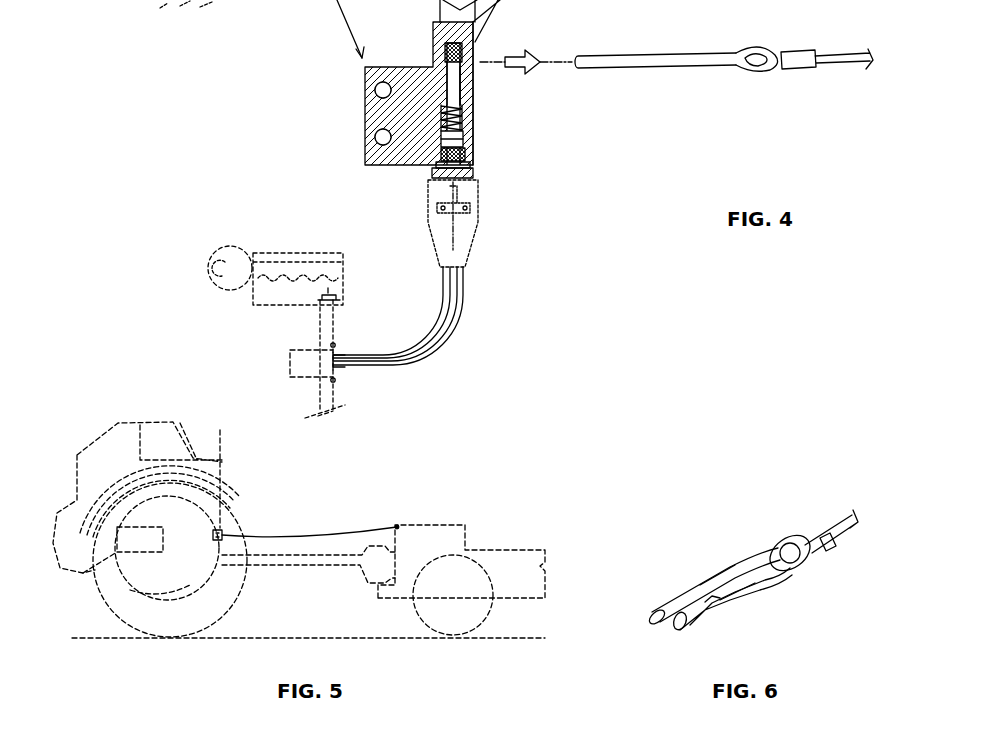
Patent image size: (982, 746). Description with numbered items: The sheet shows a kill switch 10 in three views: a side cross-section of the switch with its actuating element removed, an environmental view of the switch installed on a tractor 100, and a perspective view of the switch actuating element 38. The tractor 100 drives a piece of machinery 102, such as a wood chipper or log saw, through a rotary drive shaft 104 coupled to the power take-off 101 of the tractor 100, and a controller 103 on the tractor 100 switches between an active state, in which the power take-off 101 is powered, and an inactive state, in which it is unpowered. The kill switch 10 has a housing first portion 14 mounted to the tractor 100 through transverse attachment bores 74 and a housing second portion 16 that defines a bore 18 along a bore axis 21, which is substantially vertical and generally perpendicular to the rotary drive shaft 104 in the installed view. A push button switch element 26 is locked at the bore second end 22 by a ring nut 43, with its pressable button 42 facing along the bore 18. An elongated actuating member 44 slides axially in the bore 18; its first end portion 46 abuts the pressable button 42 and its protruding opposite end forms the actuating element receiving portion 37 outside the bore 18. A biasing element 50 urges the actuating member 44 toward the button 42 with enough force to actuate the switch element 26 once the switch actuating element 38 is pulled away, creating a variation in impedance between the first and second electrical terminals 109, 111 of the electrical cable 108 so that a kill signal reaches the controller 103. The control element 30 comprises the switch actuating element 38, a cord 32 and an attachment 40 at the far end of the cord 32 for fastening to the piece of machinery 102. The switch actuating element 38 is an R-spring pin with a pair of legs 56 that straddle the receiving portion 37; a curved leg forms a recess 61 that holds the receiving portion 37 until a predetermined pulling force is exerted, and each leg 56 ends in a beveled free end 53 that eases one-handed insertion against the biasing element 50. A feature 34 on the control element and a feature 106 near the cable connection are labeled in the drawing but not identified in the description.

In FIG. 5, the kill switch 10 is at (295, 519).
In FIG. 4, the housing first portion 14 is at (372, 168).
In FIG. 4, the housing second portion 16 is at (476, 100).
In FIG. 4, the bore 18 is at (476, 88).
In FIG. 5, the bore axis 21 is at (200, 488).
In FIG. 4, the bore second end 22 is at (470, 165).
In FIG. 4, the switch element 26 is at (481, 231).
In FIG. 6, the control element 30 is at (716, 468).
In FIG. 4, the cord 32 is at (858, 62).
In FIG. 5, the cord 32 is at (338, 530).
In FIG. 6, the cord 32 is at (846, 518).
In FIG. 6, the loop 34 is at (787, 550).
In FIG. 4, the actuating element receiving portion 37 is at (475, 66).
In FIG. 6, the switch actuating element 38 is at (738, 538).
In FIG. 5, the attachment 40 is at (397, 527).
In FIG. 4, the pressable button 42 is at (470, 152).
In FIG. 4, the ring nut 43 is at (428, 173).
In FIG. 4, the actuating member 44 is at (450, 87).
In FIG. 4, the actuating member first end portion 46 is at (458, 138).
In FIG. 4, the biasing element 50 is at (440, 110).
In FIG. 6, the beveled free end 53 is at (656, 618).
In FIG. 6, the legs 56 is at (712, 575).
In FIG. 6, the recess 61 is at (712, 596).
In FIG. 4, the attachment bore 74 is at (380, 90).
In FIG. 5, the tractor 100 is at (108, 430).
In FIG. 5, the power take-off 101 is at (197, 580).
In FIG. 5, the piece of machinery 102 is at (533, 538).
In FIG. 4, the controller 103 is at (292, 375).
In FIG. 5, the controller 103 is at (127, 552).
In FIG. 5, the rotary drive shaft 104 is at (328, 567).
In FIG. 4, the tool 106 is at (252, 307).
In FIG. 4, the electrical cable 108 is at (435, 338).
In FIG. 4, the first electrical terminal 109 is at (345, 358).
In FIG. 4, the second electrical terminal 111 is at (338, 367).